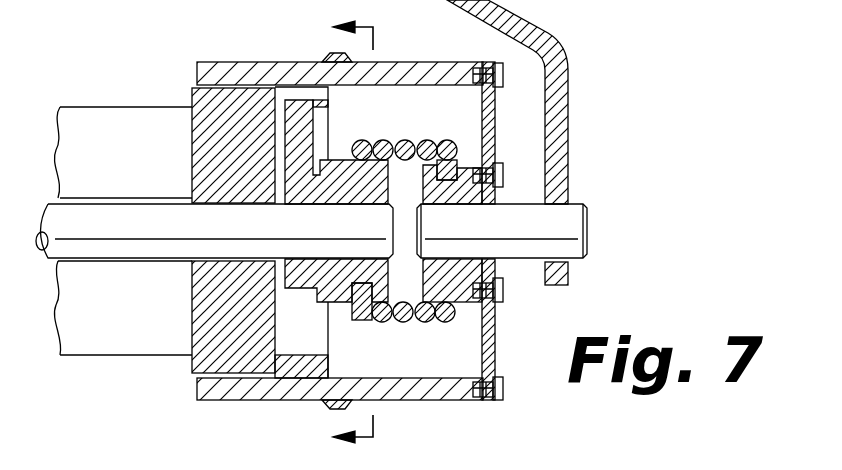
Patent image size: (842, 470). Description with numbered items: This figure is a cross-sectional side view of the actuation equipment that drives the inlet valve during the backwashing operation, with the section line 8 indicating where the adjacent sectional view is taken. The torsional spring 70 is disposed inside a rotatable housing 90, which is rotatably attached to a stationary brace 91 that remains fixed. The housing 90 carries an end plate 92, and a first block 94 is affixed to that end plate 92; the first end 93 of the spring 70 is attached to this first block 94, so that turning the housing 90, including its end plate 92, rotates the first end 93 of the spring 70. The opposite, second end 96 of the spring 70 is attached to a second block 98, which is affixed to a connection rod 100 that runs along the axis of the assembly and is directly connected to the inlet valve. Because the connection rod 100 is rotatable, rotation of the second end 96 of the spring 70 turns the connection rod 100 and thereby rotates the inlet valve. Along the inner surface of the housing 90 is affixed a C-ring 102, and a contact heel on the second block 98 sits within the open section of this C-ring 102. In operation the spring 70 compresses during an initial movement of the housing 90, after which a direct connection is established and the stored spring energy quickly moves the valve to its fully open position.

The section line 8- 8 is at (338, 235).
The torsional spring 70 is at (382, 147).
The rotatable housing 90 is at (405, 62).
The stationary brace 91 is at (556, 132).
The end plate 92 is at (492, 120).
The first end of the spring 93 is at (447, 143).
The first block 94 is at (478, 194).
The second end of the spring 96 is at (362, 320).
The second block 98 is at (312, 278).
The connection rod 100 is at (147, 240).
The C-ring 102 is at (310, 368).